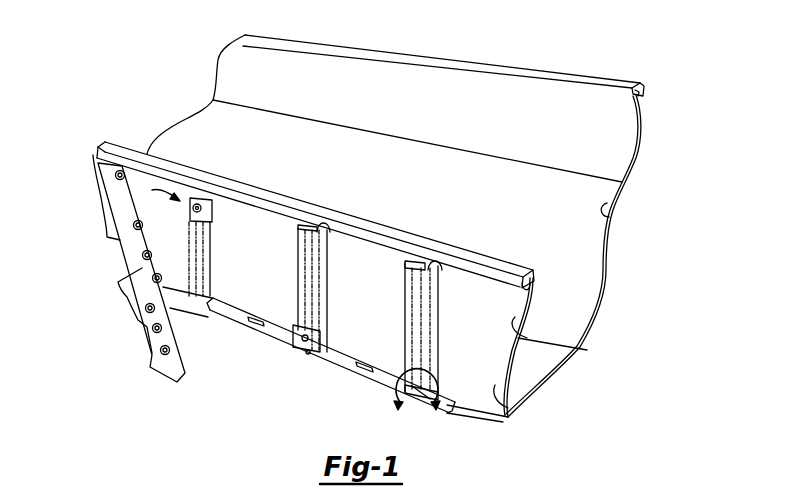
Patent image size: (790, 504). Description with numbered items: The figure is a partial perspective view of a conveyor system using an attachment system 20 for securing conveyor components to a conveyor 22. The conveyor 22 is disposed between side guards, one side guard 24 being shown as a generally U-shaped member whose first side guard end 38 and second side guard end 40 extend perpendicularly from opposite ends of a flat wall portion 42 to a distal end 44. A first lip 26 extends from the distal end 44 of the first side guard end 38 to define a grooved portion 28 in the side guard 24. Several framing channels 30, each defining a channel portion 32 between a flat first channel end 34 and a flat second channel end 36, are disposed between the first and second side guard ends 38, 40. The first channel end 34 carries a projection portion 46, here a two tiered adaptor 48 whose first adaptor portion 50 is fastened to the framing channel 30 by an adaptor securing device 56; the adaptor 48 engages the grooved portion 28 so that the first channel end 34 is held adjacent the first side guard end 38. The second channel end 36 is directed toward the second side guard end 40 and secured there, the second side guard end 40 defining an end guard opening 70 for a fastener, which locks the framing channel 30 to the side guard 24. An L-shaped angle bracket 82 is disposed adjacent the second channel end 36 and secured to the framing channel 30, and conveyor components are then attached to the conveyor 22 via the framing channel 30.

The attachment system 20 is at (146, 63).
The conveyor 22 is at (614, 213).
The side guard 24 is at (640, 153).
The first lip 26 is at (98, 153).
The grooved portion 28 is at (641, 98).
The framing channel 30 is at (215, 283).
The channel portion 32 is at (310, 277).
The first channel end 34 is at (325, 228).
The second channel end 36 is at (207, 315).
The first side guard end 38 is at (395, 58).
The second side guard end 40 is at (452, 405).
The flat wall portion 42 is at (507, 418).
The distal end 44 is at (475, 62).
The projection portion 46 is at (297, 227).
The two tiered adaptor 48 is at (154, 191).
The first adaptor portion 50 is at (192, 208).
The adaptor securing device 56 is at (196, 212).
The end guard opening 70 is at (248, 322).
The angle bracket 82 is at (303, 350).